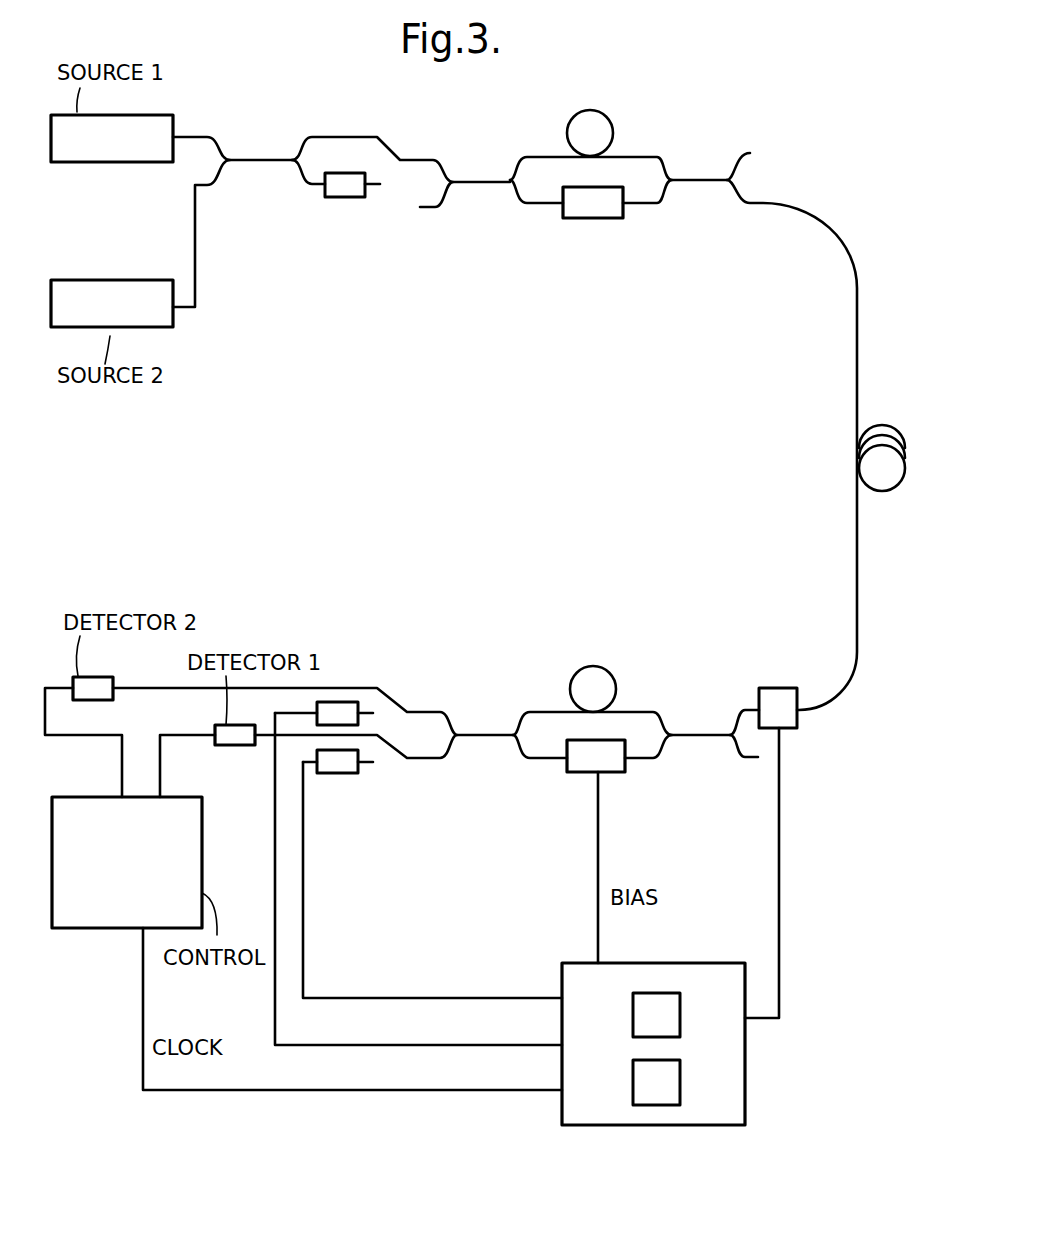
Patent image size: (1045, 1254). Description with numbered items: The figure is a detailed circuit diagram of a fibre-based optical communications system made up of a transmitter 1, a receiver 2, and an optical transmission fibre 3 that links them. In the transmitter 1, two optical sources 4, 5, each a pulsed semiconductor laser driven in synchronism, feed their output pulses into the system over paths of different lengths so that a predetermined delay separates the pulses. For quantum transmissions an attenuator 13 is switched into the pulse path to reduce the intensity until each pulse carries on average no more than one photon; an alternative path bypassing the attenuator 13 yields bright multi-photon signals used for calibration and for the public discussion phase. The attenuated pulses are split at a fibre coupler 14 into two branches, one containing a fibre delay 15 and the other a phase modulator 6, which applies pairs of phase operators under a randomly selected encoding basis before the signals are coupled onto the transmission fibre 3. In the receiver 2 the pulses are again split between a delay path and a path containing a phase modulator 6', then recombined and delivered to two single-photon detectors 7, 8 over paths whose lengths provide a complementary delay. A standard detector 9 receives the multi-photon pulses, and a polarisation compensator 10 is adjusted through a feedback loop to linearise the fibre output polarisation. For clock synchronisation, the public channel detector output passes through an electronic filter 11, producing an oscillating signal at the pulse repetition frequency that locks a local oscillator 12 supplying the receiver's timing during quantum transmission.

The transmitter 1 is at (294, 395).
The receiver 2 is at (397, 722).
The optical transmission fibre 3 is at (885, 418).
The optical source 4 is at (173, 122).
The optical source 5 is at (77, 278).
The phase modulator 6 is at (589, 232).
The phase modulator 6' is at (611, 777).
The single-photon detector 7 is at (247, 745).
The single-photon detector 8 is at (340, 137).
The standard detector 9 is at (358, 718).
The polarisation compensator 10 is at (800, 722).
The electronic filter 11 is at (672, 1013).
The local oscillator 12 is at (672, 1077).
The attenuator 13 is at (355, 198).
The fibre coupler 14 is at (490, 185).
The fibre delay 15 is at (612, 133).